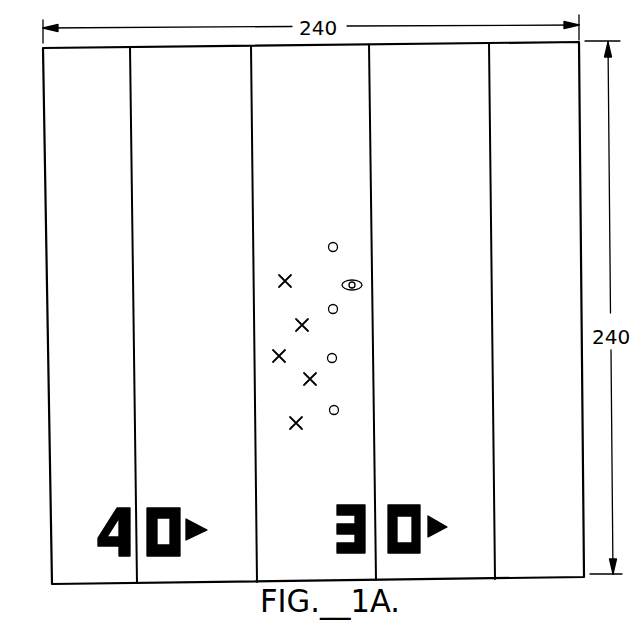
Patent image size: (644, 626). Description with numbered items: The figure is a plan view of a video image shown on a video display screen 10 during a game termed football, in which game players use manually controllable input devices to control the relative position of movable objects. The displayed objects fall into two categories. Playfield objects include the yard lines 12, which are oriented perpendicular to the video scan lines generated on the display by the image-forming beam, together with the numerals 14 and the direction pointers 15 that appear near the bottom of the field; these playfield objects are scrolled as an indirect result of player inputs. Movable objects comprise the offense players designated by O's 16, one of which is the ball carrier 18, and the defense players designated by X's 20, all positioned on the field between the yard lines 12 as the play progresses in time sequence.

The video display screen 10 is at (466, 578).
The yard lines 12 is at (251, 135).
The numerals 14 is at (162, 557).
The direction pointers 15 is at (196, 542).
The O's 16 is at (336, 313).
The ball carrier 18 is at (360, 281).
The X's 20 is at (304, 381).